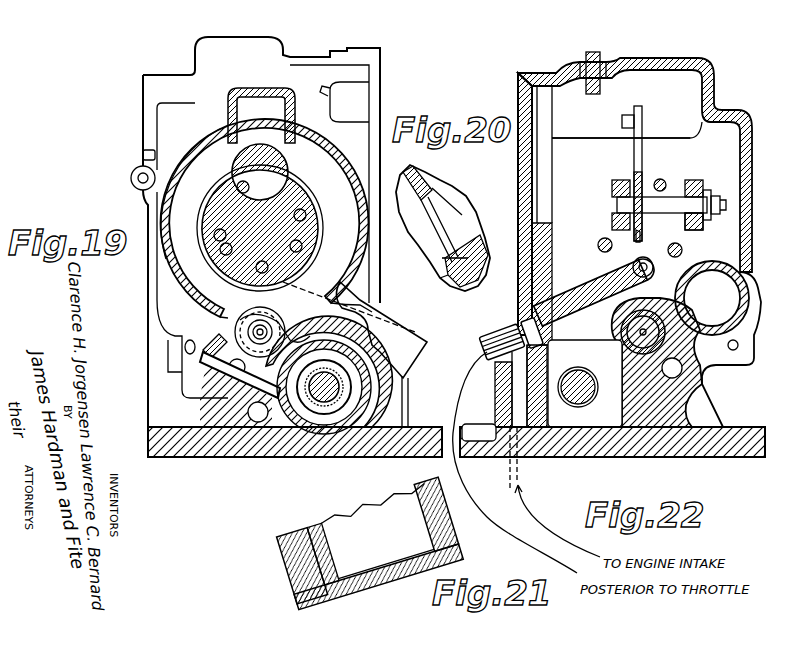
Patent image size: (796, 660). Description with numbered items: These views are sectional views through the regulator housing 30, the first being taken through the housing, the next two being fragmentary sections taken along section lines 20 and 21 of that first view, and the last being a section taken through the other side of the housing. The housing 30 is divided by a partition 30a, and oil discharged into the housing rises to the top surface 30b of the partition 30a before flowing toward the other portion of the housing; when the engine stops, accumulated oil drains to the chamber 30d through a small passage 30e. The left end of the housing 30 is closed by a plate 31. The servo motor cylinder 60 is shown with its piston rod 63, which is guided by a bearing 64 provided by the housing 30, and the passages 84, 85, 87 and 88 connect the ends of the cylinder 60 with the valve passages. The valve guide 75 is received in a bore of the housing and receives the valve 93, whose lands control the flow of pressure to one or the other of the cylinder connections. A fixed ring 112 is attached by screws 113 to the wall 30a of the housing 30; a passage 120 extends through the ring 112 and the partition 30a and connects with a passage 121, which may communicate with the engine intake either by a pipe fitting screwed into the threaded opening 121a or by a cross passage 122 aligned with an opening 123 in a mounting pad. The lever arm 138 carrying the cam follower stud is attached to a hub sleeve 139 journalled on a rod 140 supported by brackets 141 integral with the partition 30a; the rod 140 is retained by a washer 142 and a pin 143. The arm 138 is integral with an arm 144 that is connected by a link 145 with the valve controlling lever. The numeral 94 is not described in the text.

In FIG. 19, the section line 20— 20 is at (244, 286).
In FIG. 19, the section line 21— 21 is at (367, 400).
In FIG. 22, the regulator housing 30 is at (748, 160).
In FIG. 22, the partition 30a is at (714, 112).
In FIG. 19, the top surface of partition 30b is at (256, 136).
In FIG. 22, the top surface of partition 30b is at (598, 128).
In FIG. 20, the chamber 30d is at (482, 250).
In FIG. 20, the small passage 30e is at (448, 280).
In FIG. 21, the plate 31 is at (448, 550).
In FIG. 21, the cylinder 60 is at (418, 498).
In FIG. 19, the piston rod 63 is at (324, 402).
In FIG. 22, the piston rod 63 is at (588, 364).
In FIG. 19, the bearing 64 is at (330, 402).
In FIG. 19, the valve guide 75 is at (278, 340).
In FIG. 19, the passage 84 is at (259, 422).
In FIG. 21, the passage 84 is at (302, 565).
In FIG. 21, the passage 85 is at (334, 562).
In FIG. 19, the passage 87 is at (230, 364).
In FIG. 19, the passage 88 is at (260, 378).
In FIG. 19, the valve 93 is at (265, 318).
In FIG. 19, the roller pin 94 is at (272, 330).
In FIG. 19, the fixed ring 112 is at (285, 178).
In FIG. 19, the screws 113 is at (238, 184).
In FIG. 22, the screws 113 is at (660, 178).
In FIG. 19, the passage 120 is at (262, 261).
In FIG. 22, the passage 120 is at (653, 268).
In FIG. 19, the passage 121 is at (380, 292).
In FIG. 22, the passage 121 is at (587, 304).
In FIG. 22, the threaded opening 121a is at (488, 369).
In FIG. 22, the cross passage 122 is at (518, 399).
In FIG. 22, the opening 123 is at (518, 476).
In FIG. 22, the lever arm 138 is at (641, 236).
In FIG. 22, the hub sleeve 139 is at (673, 196).
In FIG. 22, the rod 140 is at (712, 198).
In FIG. 22, the brackets 141 is at (698, 180).
In FIG. 22, the washer 142 is at (700, 224).
In FIG. 22, the pin 143 is at (729, 205).
In FIG. 22, the arm 144 is at (634, 157).
In FIG. 22, the link 145 is at (644, 114).